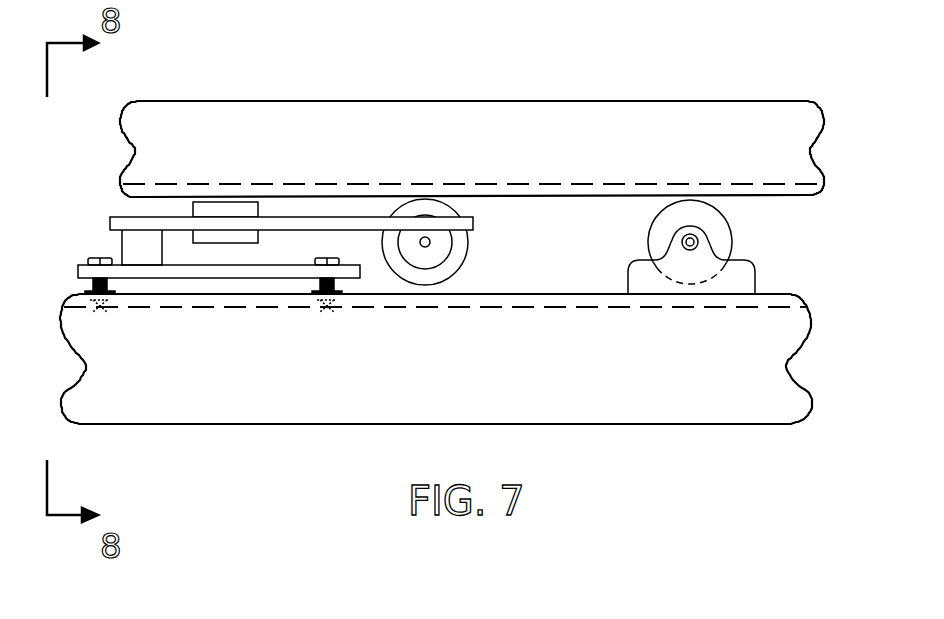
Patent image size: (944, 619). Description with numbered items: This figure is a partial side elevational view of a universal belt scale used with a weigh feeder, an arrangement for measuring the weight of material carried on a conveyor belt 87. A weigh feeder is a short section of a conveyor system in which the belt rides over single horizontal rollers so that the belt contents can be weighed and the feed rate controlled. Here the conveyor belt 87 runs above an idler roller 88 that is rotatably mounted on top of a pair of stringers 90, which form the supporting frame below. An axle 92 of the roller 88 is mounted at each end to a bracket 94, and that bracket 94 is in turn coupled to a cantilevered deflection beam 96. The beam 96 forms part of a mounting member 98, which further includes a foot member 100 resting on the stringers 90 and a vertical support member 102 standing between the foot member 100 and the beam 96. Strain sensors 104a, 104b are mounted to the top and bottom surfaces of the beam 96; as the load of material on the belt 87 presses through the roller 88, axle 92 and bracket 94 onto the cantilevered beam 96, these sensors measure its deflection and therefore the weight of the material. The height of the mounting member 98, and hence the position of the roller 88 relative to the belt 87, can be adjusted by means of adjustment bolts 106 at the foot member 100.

The conveyor belt 87 is at (685, 125).
The stringers 90 is at (608, 402).
The idler roller 88 is at (457, 275).
The axle 92 is at (425, 247).
The bracket 94 is at (440, 238).
The mounting member 98 is at (248, 263).
The cantilevered deflection beam 96 is at (123, 222).
The vertical support member 102 is at (138, 240).
The strain sensor 104a is at (227, 201).
The strain sensor 104b is at (266, 263).
The foot member 100 is at (202, 272).
The adjustment bolts 106 is at (110, 320).